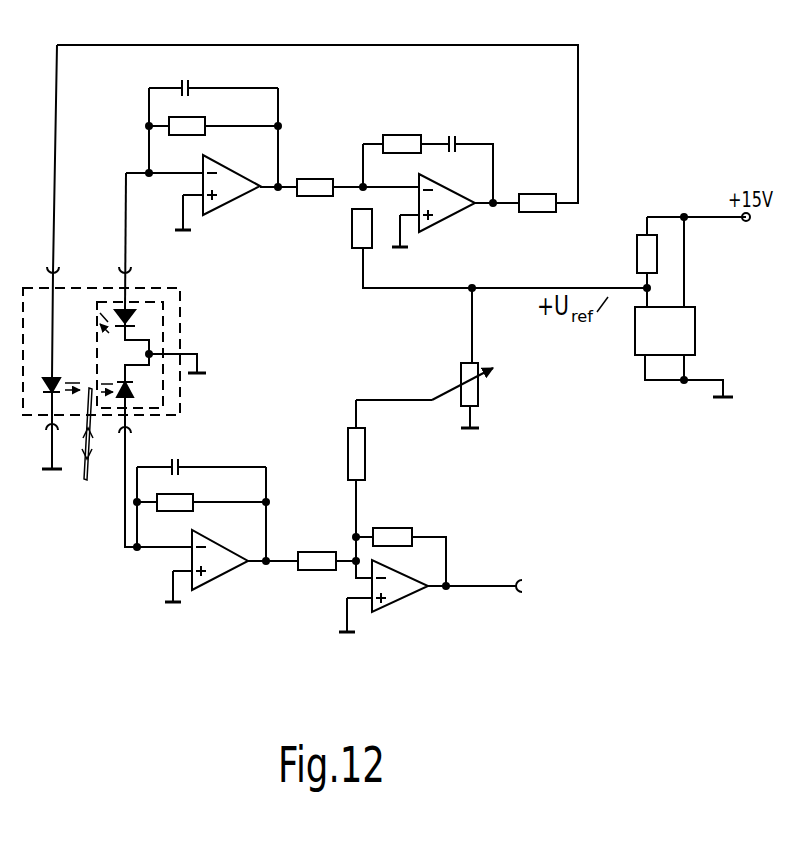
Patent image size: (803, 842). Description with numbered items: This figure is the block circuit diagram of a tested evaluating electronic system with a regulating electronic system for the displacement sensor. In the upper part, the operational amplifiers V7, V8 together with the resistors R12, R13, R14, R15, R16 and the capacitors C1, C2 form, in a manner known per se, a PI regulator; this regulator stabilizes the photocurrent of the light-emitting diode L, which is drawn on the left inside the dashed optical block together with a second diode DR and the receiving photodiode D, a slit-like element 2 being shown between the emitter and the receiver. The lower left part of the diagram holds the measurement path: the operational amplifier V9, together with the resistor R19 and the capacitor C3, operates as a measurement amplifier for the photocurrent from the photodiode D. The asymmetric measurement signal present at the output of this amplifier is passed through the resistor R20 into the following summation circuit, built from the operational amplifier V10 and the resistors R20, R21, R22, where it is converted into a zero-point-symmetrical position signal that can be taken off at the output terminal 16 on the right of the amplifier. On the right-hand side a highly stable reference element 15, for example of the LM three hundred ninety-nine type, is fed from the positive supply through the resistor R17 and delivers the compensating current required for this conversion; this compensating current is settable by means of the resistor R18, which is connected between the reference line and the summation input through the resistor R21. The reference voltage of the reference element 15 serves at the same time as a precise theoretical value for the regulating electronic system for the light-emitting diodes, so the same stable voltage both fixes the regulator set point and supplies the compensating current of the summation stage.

The capacitor C1 is at (188, 85).
The resistor R12 is at (197, 118).
The operational amplifier V7 is at (232, 192).
The resistor R13 is at (312, 190).
The resistor R14 is at (410, 120).
The capacitor C2 is at (456, 137).
The resistor R15 is at (360, 230).
The operational amplifier V8 is at (443, 212).
The resistor R16 is at (533, 203).
The resistor R17 is at (643, 250).
The reference element 15 is at (682, 338).
The resistor R18 is at (462, 373).
The resistor R21 is at (357, 462).
The capacitor C3 is at (180, 462).
The resistor R19 is at (185, 494).
The operational amplifier V9 is at (218, 567).
The resistor R20 is at (313, 560).
The resistor R22 is at (388, 535).
The operational amplifier V10 is at (397, 595).
The output terminal 16 is at (525, 597).
The reference light emitting diode DR is at (137, 318).
The photodiode D is at (133, 388).
The light-emitting diode L is at (45, 383).
The movable slit element 2 is at (83, 475).